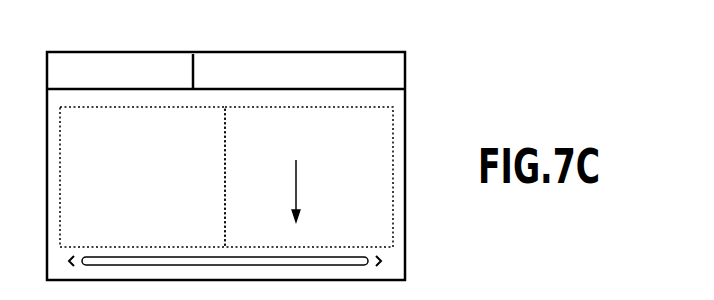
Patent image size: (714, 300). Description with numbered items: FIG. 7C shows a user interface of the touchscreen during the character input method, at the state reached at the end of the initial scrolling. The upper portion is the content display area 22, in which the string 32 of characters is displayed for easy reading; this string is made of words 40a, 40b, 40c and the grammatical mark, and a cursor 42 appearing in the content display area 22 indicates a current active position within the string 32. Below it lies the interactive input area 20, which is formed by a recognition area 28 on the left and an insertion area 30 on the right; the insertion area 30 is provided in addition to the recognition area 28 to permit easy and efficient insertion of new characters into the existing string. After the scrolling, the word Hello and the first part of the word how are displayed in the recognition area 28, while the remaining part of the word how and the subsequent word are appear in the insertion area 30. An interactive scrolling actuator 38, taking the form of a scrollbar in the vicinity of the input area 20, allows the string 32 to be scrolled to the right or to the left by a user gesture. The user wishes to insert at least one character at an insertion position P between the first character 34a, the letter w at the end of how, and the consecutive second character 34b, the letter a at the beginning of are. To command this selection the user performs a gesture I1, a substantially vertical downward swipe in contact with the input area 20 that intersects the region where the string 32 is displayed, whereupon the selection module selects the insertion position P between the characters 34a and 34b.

The input area 20 is at (407, 240).
The content display area 22 is at (407, 65).
The recognition area 28 is at (90, 161).
The insertion area 30 is at (383, 161).
The string of characters 32 is at (97, 63).
The first character 34a is at (178, 88).
The second character 34b is at (201, 86).
The interactive scrolling actuator 38 is at (337, 258).
The word 40a is at (163, 65).
The word 40b is at (227, 63).
The word 40c is at (270, 65).
The cursor 42 is at (197, 63).
The gesture I1 is at (294, 170).
The insertion position P is at (291, 203).